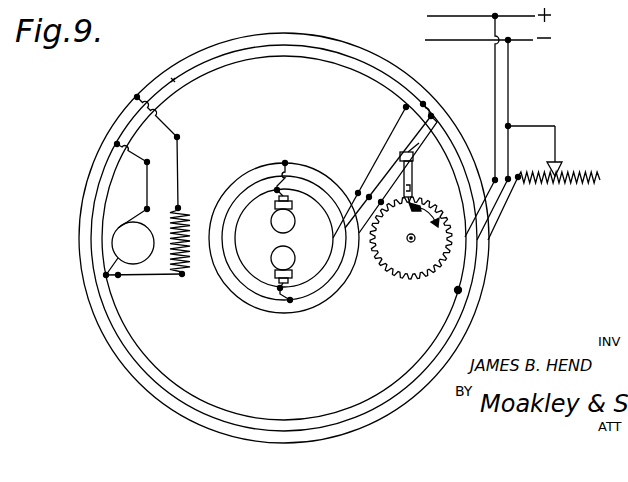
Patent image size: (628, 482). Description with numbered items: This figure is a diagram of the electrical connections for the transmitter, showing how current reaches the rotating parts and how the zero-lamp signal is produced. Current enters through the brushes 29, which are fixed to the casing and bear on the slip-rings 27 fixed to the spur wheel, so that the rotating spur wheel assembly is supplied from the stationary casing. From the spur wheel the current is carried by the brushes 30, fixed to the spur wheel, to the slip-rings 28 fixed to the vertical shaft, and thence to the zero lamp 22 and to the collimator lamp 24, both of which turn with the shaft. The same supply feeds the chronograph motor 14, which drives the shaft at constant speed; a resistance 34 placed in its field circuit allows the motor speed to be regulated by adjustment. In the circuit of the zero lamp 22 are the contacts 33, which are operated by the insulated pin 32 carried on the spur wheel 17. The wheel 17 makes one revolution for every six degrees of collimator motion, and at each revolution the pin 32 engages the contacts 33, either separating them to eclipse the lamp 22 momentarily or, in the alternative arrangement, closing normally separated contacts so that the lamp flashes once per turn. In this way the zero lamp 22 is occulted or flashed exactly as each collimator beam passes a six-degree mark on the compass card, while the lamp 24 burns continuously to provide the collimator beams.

The chronograph motor 14 is at (152, 275).
The spur wheel 17 is at (417, 265).
The zero lamp 22 is at (271, 221).
The lamp 24 is at (271, 258).
The slip-rings 27 is at (475, 295).
The slip-rings 28 is at (238, 289).
The brushes 29 is at (500, 212).
The brushes 30 is at (357, 192).
The insulated pin 32 is at (407, 203).
The contacts 33 is at (412, 180).
The resistance 34 is at (573, 184).